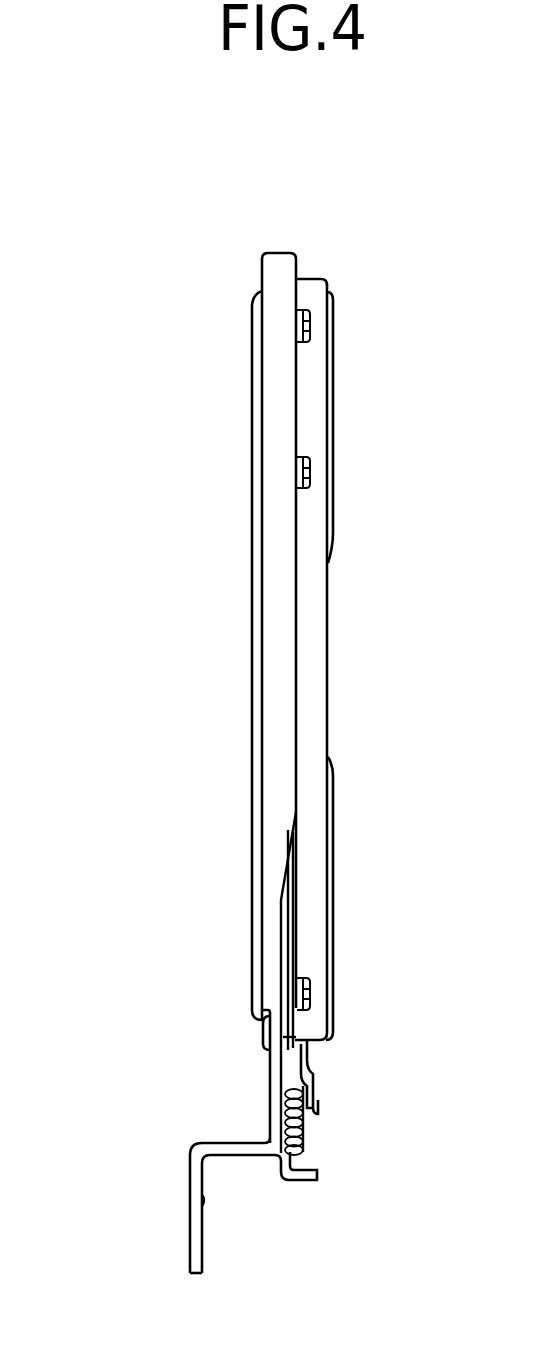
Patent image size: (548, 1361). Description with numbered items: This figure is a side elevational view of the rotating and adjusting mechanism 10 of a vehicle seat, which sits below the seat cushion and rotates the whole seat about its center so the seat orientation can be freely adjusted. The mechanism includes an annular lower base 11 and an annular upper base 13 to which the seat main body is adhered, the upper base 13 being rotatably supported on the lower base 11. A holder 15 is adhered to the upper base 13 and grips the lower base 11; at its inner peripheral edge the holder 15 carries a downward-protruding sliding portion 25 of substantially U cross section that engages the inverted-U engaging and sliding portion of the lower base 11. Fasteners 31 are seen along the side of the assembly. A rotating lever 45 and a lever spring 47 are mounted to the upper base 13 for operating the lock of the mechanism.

The rotating and adjusting mechanism 10 is at (198, 256).
The lower base 11 is at (335, 424).
The upper base 13 is at (252, 638).
The holder 15 is at (314, 282).
The sliding portion 25 is at (320, 648).
The screws 31 is at (305, 324).
The rotating lever 45 is at (190, 1210).
The lever spring 47 is at (300, 1135).